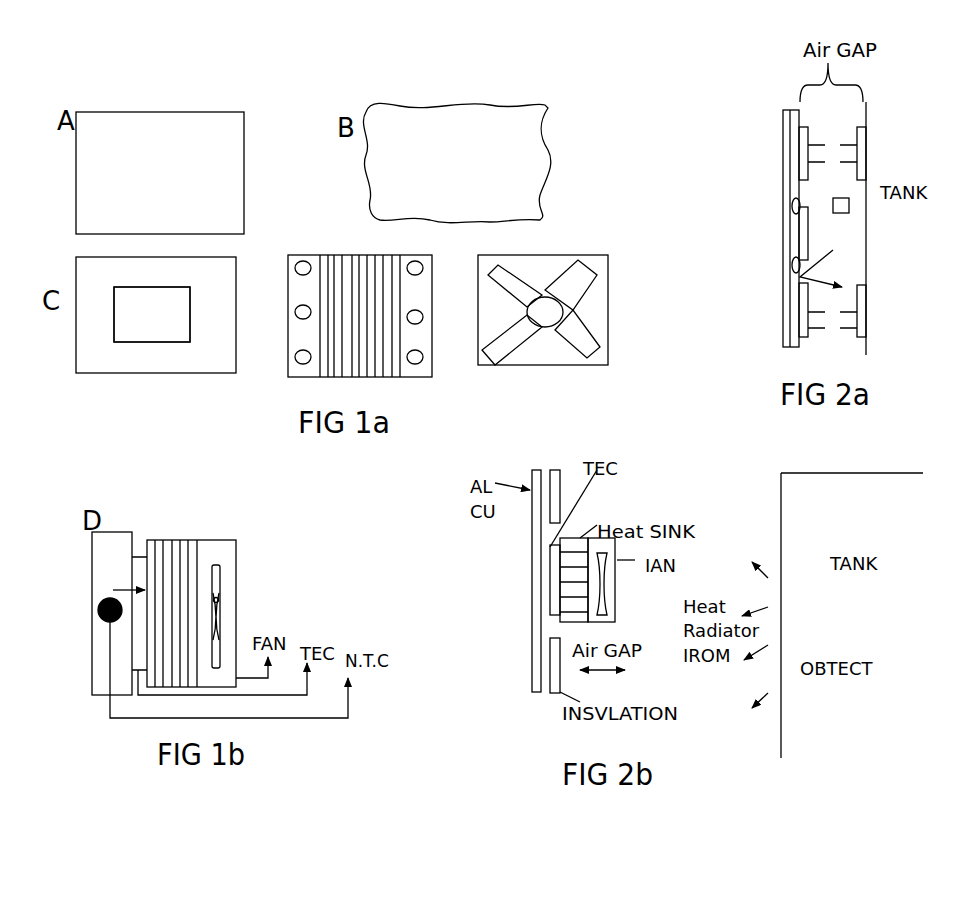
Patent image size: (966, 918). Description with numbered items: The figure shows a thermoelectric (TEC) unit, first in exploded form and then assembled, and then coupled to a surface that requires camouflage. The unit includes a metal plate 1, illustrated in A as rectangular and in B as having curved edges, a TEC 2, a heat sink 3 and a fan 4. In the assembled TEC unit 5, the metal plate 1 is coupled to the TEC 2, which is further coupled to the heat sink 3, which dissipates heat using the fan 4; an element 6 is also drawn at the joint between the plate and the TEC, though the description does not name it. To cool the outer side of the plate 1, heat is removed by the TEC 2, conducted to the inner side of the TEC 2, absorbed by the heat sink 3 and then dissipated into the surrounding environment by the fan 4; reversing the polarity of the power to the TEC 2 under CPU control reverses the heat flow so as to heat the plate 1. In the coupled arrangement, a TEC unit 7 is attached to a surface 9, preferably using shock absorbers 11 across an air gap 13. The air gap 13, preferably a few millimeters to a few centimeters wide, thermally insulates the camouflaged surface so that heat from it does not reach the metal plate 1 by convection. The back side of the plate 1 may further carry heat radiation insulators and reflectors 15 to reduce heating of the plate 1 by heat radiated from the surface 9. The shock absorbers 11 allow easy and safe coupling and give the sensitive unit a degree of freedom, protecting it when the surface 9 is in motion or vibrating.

In FIG. 1A, the metal plate 1 is at (145, 314).
In FIG. 1B, the metal plate 1 is at (112, 604).
In FIG. 1A, the TEC 2 is at (152, 319).
In FIG. 1B, the TEC 2 is at (172, 538).
In FIG. 1A, the heat sink 3 is at (347, 316).
In FIG. 1B, the heat sink 3 is at (212, 538).
In FIG. 1A, the fan 4 is at (536, 310).
In FIG. 1B, the fan 4 is at (236, 558).
In FIG. 1B, the TEC unit 5 is at (93, 602).
In FIG. 1B, the insulation 6 is at (139, 552).
In FIG. 2A, the TEC unit 7 is at (755, 228).
In FIG. 2A, the surface 9 is at (881, 228).
In FIG. 2A, the shock absorbers 11 is at (807, 123).
In FIG. 2A, the air gap 13 is at (849, 213).
In FIG. 2B, the heat radiation insulators and reflectors 15 is at (567, 483).